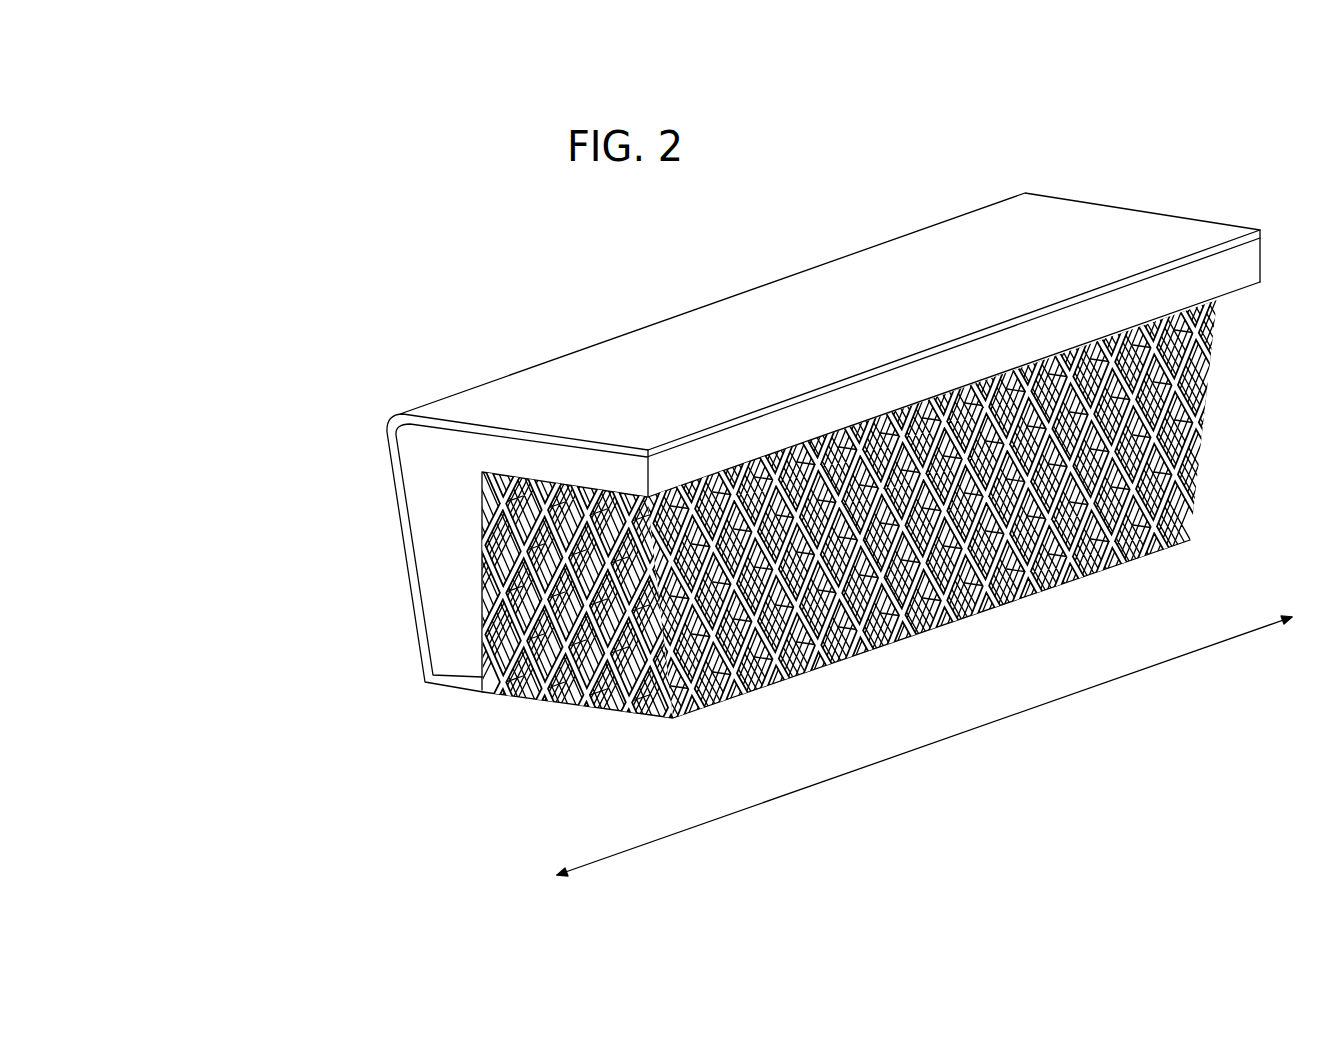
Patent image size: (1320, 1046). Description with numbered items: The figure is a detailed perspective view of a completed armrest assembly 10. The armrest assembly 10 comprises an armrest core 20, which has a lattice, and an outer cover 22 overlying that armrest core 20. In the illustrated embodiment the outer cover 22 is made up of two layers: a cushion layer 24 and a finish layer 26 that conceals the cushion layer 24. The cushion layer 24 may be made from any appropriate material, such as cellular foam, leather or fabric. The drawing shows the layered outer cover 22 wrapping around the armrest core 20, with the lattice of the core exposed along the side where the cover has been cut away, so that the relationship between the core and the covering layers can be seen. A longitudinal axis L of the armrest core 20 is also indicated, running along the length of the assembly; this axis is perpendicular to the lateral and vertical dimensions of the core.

The armrest assembly 10 is at (1040, 137).
The armrest core 20 is at (558, 722).
The outer cover 22 is at (245, 423).
The cushion layer 24 is at (437, 520).
The finish layer 26 is at (385, 463).
The longitudinal axis L is at (965, 733).